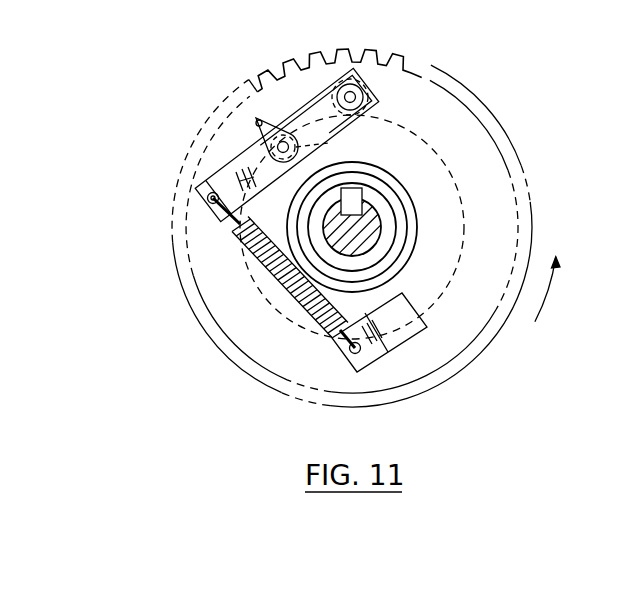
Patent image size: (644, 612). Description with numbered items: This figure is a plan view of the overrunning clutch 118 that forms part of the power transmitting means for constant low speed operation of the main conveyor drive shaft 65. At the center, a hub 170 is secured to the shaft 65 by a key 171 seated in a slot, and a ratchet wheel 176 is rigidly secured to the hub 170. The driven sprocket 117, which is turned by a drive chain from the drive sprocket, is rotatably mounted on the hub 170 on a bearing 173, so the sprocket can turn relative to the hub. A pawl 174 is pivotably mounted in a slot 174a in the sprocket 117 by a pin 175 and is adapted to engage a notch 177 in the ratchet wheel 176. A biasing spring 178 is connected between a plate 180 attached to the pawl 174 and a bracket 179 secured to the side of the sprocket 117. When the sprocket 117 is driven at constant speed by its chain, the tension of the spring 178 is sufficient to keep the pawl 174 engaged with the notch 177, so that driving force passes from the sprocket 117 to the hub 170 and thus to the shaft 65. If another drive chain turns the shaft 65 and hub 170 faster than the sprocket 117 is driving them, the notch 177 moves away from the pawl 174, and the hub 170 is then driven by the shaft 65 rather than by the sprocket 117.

The driven sprocket 117 is at (410, 62).
The overrunning clutch 118 is at (188, 122).
The main conveyor drive shaft 65 is at (378, 228).
The hub 170 is at (388, 247).
The key 171 is at (356, 200).
The bearing 173 is at (386, 267).
The pawl 174 is at (278, 148).
The slot 174a is at (258, 121).
The pin 175 is at (356, 97).
The ratchet wheel 176 is at (449, 162).
The notch 177 is at (328, 146).
The biasing spring 178 is at (276, 276).
The bracket 179 is at (380, 357).
The plate 180 is at (218, 212).